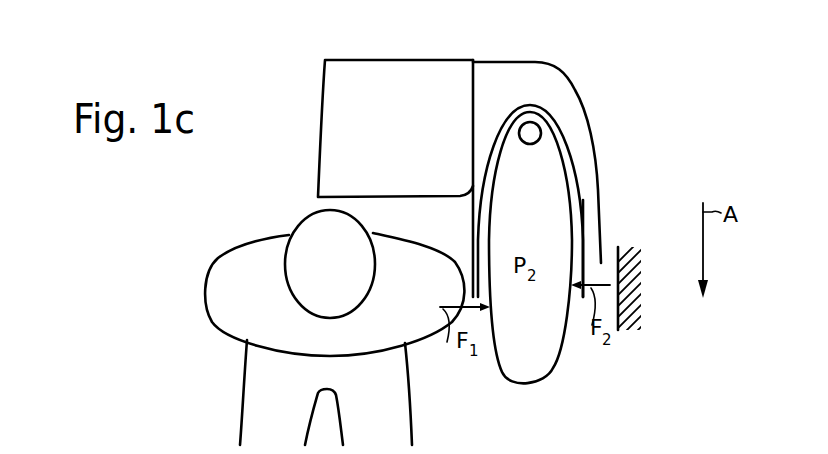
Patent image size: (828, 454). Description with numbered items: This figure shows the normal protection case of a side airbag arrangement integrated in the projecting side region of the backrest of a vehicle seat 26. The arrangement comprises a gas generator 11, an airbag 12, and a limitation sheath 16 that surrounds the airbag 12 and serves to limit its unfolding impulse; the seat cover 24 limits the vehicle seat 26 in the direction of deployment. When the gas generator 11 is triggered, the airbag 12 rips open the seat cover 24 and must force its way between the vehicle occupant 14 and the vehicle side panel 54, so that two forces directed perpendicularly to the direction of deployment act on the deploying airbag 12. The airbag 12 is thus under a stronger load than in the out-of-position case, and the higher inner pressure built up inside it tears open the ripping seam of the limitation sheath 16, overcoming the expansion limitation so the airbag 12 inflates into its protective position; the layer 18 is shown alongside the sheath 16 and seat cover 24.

The gas generator 11 is at (538, 129).
The airbag 12 is at (540, 365).
The vehicle occupant 14 is at (207, 262).
The limitation sheath 16 is at (590, 230).
The inner layer 18 is at (574, 200).
The seat cover 24 is at (594, 142).
The vehicle seat 26 is at (338, 88).
The vehicle side panel 54 is at (627, 290).